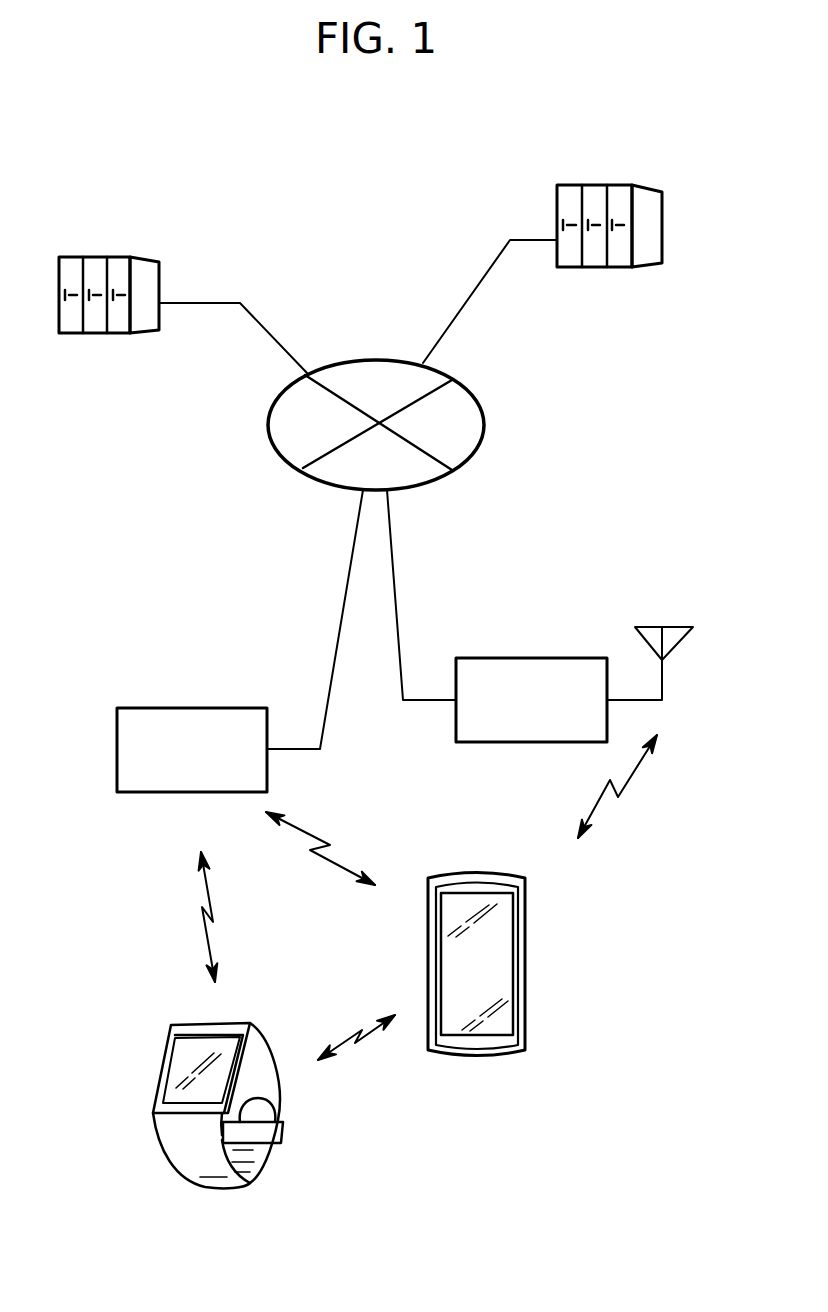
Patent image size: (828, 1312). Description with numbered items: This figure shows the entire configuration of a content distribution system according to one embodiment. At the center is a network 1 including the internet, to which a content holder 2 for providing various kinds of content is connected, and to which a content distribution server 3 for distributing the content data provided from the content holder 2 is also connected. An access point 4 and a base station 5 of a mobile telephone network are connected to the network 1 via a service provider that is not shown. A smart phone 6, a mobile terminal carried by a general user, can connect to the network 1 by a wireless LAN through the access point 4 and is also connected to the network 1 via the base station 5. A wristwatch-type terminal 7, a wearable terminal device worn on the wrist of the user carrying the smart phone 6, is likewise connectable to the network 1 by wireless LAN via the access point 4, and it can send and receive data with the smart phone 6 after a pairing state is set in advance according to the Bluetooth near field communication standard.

The network 1 is at (485, 425).
The content holder 2 is at (647, 187).
The content distribution server 3 is at (124, 256).
The access point 4 is at (231, 708).
The base station 5 is at (565, 658).
The smart phone 6 is at (494, 875).
The wristwatch-type terminal 7 is at (257, 1024).